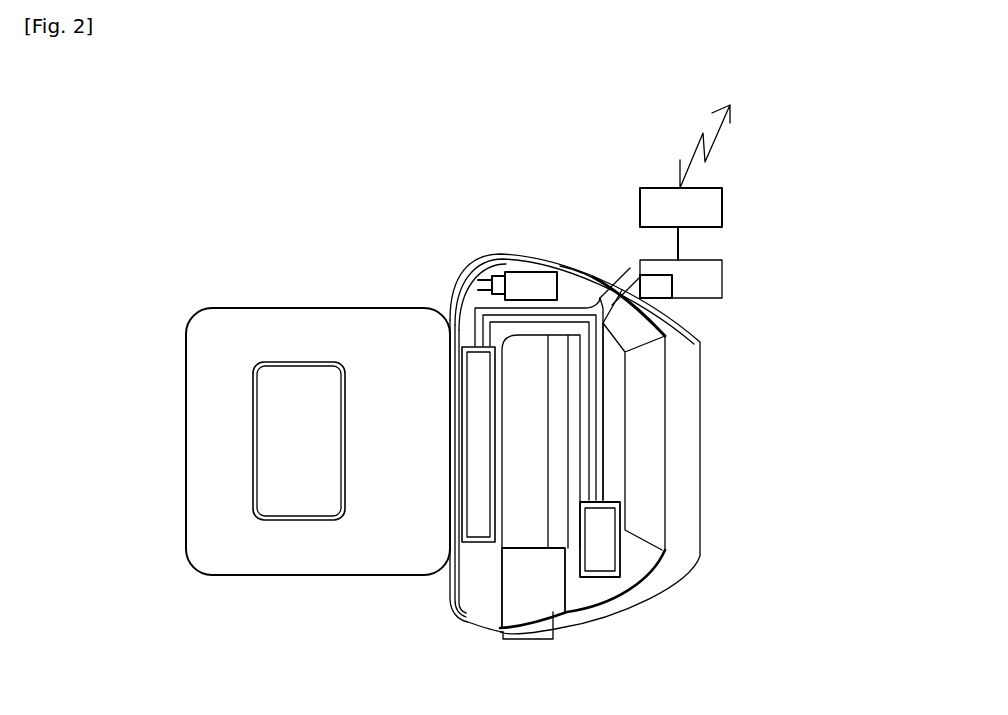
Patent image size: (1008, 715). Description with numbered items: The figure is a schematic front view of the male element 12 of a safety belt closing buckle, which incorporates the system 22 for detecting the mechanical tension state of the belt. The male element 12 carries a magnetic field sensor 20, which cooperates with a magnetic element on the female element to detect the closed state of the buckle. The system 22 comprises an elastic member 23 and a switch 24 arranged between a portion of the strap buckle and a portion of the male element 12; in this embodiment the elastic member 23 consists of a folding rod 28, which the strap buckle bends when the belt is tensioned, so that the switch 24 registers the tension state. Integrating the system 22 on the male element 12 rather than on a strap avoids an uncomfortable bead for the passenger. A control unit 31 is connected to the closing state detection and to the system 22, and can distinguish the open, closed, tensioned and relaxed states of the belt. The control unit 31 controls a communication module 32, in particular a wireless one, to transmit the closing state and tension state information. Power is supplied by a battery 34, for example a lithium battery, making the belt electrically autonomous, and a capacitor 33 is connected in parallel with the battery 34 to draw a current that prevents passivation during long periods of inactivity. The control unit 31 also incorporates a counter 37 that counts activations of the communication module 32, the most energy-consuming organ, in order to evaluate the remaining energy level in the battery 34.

The male element 12 is at (387, 350).
The magnetic field sensor 20 is at (448, 345).
The system for detecting the mechanical tension state 22 is at (532, 530).
The elastic member 23 is at (522, 368).
The switch 24 is at (600, 545).
The folding rod 28 is at (520, 447).
The control unit 31 is at (706, 287).
The communication module 32 is at (703, 208).
The capacitor 33 is at (482, 278).
The battery 34 is at (538, 285).
The counter 37 is at (657, 287).